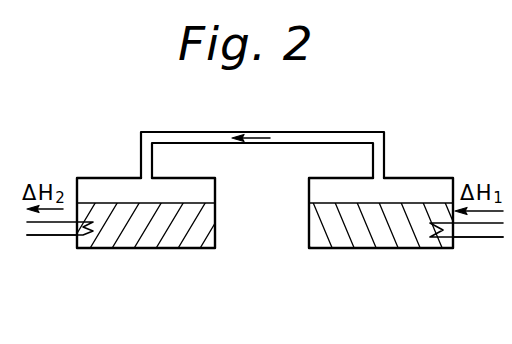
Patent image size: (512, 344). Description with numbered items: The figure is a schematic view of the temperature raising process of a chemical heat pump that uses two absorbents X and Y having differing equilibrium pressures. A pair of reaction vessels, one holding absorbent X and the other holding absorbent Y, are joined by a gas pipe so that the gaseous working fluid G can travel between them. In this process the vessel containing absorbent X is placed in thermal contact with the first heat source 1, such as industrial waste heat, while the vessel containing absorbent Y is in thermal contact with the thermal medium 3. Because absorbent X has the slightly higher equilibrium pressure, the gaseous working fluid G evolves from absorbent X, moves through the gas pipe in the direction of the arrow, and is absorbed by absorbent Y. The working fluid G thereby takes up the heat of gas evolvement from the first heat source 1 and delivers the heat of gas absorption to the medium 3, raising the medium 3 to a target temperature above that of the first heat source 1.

The first heat source 1 is at (482, 238).
The thermal medium 3 is at (48, 236).
The absorbent X is at (405, 240).
The absorbent Y is at (162, 238).
The gaseous working fluid G is at (255, 133).